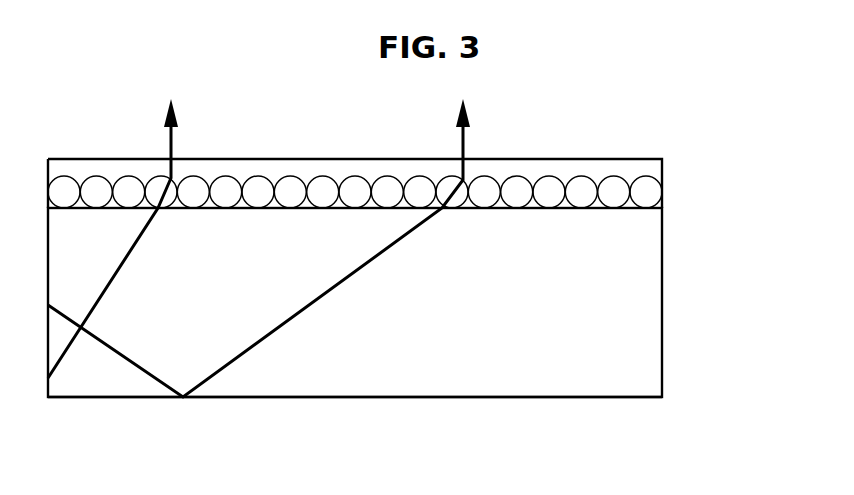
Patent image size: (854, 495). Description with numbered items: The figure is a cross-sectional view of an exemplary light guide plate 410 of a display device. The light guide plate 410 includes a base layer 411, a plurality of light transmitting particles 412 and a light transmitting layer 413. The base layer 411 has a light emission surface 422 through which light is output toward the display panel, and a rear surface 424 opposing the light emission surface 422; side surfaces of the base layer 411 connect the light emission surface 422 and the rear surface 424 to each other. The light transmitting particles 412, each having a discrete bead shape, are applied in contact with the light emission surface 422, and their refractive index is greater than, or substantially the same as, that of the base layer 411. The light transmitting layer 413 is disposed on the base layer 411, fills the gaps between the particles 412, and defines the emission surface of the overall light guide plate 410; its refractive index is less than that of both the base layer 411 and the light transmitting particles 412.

The light guide plate 410 is at (431, 258).
The base layer 411 is at (648, 298).
The light transmitting particle 412 is at (398, 163).
The light transmitting layer 413 is at (628, 167).
The light emission surface 422 is at (364, 207).
The rear surface 424 is at (354, 397).